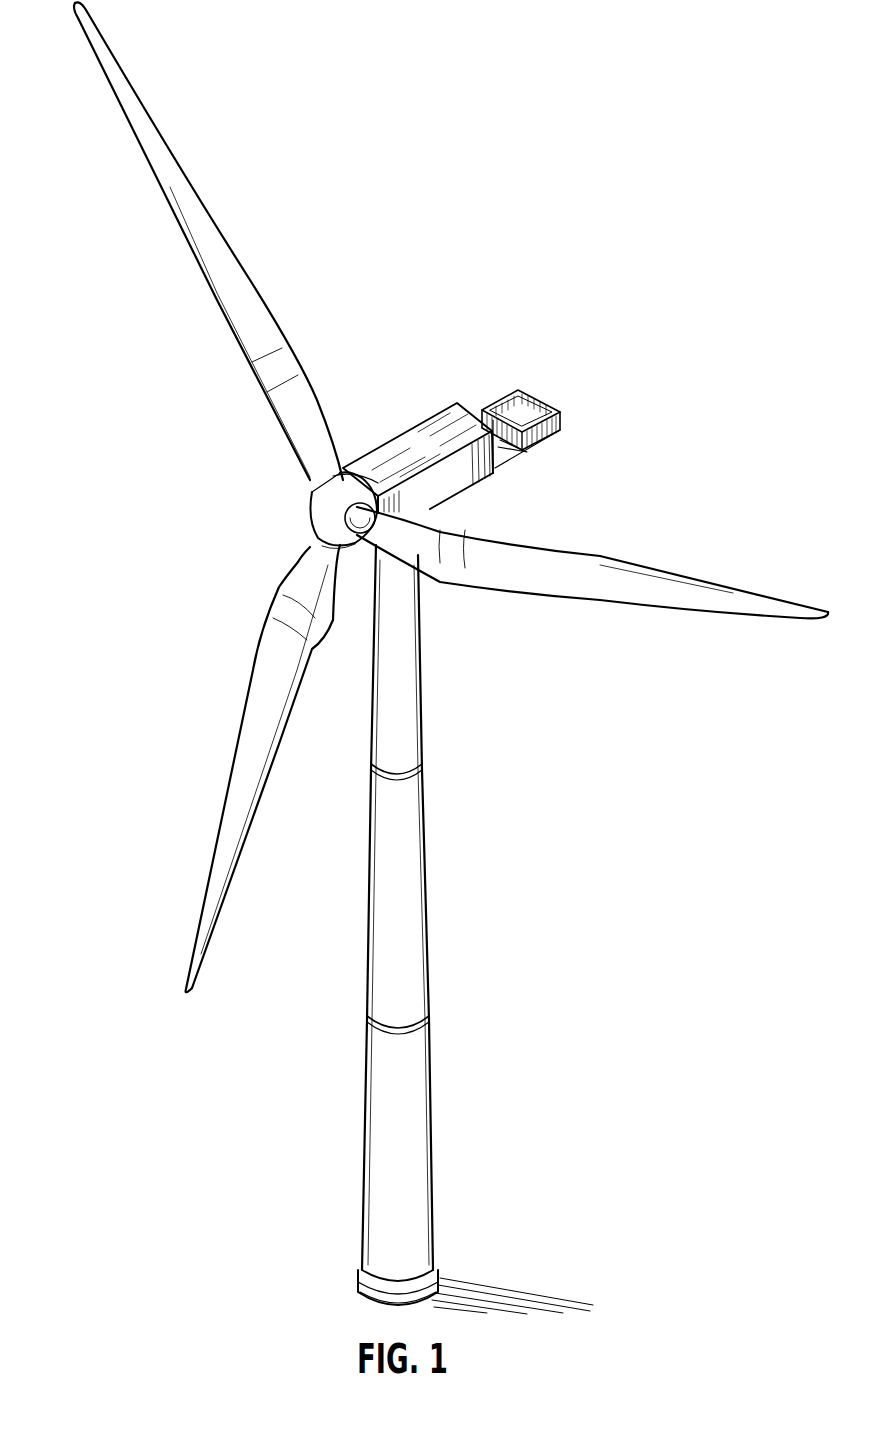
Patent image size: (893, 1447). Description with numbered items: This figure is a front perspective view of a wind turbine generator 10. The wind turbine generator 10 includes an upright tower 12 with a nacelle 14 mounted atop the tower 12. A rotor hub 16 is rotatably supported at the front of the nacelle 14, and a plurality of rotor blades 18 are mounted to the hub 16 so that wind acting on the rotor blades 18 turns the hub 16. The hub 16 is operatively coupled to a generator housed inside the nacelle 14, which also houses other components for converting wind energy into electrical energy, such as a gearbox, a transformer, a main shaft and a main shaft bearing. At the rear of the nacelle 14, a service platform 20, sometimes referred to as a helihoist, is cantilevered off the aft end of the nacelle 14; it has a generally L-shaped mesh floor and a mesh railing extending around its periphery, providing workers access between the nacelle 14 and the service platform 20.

The wind turbine generator 10 is at (572, 216).
The tower 12 is at (428, 930).
The nacelle 14 is at (390, 438).
The rotor hub 16 is at (317, 522).
The rotor blades 18 is at (248, 285).
The service platform 20 is at (503, 391).